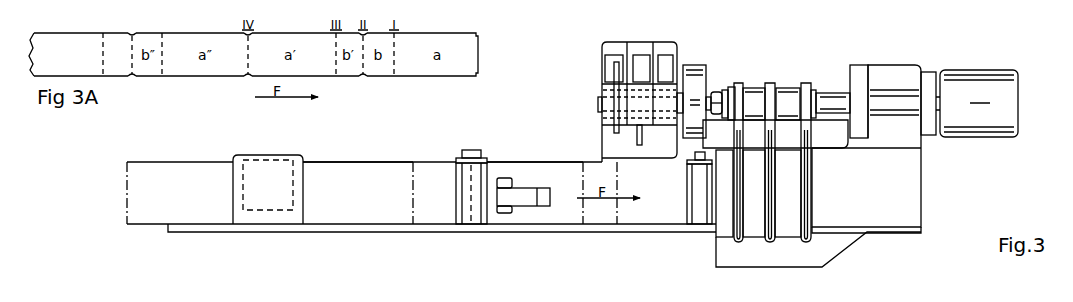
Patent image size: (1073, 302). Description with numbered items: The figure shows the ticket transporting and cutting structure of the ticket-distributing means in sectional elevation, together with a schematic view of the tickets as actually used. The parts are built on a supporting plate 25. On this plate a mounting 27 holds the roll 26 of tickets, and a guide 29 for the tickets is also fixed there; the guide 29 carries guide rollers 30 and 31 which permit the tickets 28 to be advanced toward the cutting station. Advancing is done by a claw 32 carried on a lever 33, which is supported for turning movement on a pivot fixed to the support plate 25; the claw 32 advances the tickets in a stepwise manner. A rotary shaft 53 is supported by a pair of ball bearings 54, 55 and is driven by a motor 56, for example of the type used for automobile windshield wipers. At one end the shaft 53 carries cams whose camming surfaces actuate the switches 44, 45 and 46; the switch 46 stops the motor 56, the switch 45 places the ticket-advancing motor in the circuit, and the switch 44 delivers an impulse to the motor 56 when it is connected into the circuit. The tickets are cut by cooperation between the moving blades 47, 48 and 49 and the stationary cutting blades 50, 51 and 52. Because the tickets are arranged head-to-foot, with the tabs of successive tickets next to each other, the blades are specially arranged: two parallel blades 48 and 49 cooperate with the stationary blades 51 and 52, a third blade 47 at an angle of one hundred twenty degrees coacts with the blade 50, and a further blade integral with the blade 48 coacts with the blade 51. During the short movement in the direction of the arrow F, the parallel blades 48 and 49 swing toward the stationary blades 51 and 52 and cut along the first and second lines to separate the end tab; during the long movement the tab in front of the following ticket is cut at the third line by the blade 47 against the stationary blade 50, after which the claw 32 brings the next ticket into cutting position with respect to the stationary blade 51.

The supporting plate 25 is at (329, 233).
The roll of tickets 26 is at (192, 164).
The mounting 27 is at (257, 156).
The tickets 28 is at (369, 164).
The guide 29 is at (516, 162).
The guide roller 30 is at (471, 218).
The guide roller 31 is at (688, 226).
The claw 32 is at (530, 190).
The lever 33 is at (503, 207).
The switch 44 is at (605, 68).
The switch 45 is at (643, 53).
The switch 46 is at (673, 67).
The blade 47 is at (741, 83).
The blade 48 is at (773, 85).
The blade 49 is at (805, 83).
The stationary cutting blade 50 is at (724, 230).
The stationary cutting blade 51 is at (758, 230).
The stationary cutting blade 52 is at (792, 230).
The rotary shaft 53 is at (832, 92).
The ball bearing 54 is at (712, 68).
The ball bearing 55 is at (866, 66).
The motor 56 is at (976, 72).